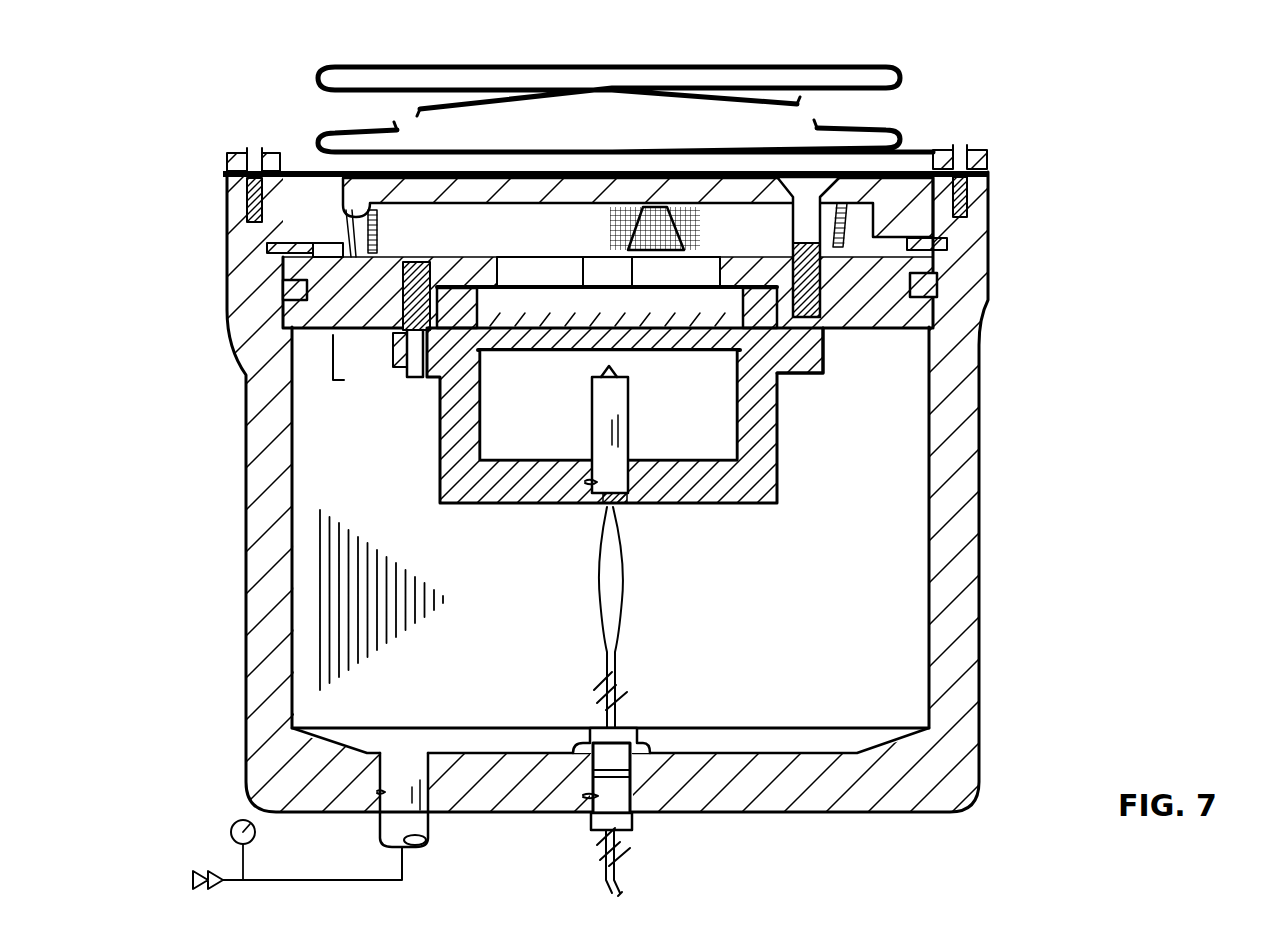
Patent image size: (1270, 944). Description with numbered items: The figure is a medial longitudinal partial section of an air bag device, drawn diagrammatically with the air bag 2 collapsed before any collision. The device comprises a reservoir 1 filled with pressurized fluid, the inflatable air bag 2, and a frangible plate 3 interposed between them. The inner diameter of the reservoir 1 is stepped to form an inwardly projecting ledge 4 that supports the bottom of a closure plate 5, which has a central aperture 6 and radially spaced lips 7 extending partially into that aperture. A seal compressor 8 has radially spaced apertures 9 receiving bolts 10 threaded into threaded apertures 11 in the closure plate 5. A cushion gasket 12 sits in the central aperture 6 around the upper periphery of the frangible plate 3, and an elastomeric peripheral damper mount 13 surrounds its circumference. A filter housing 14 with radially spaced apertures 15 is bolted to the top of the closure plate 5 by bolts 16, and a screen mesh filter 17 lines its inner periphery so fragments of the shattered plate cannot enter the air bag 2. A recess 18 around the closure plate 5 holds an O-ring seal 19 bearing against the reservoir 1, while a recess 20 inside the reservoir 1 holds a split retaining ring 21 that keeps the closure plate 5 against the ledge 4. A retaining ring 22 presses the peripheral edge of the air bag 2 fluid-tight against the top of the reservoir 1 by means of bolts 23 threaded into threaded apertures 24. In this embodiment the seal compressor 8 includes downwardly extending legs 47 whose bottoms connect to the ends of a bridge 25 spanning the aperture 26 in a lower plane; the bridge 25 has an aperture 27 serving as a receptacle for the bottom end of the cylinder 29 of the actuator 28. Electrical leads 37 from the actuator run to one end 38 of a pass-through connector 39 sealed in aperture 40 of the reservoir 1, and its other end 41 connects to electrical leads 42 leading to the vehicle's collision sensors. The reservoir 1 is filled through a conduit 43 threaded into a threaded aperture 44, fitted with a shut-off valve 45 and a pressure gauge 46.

The reservoir 1 is at (977, 477).
The air bag 2 is at (750, 67).
The frangible plate 3 is at (522, 350).
The ledge 4 is at (292, 338).
The closure plate 5 is at (345, 367).
The central aperture 6 is at (676, 272).
The lips 7 is at (500, 279).
The seal compressor 8 is at (812, 373).
The apertures 9 is at (403, 383).
The bolts 10 is at (412, 403).
The threaded apertures 11 is at (403, 279).
The cushion gasket 12 is at (541, 279).
The peripheral damper mount 13 is at (740, 302).
The filter housing 14 is at (873, 203).
The apertures 15 is at (352, 240).
The bolts 16 is at (808, 290).
The filter 17 is at (380, 242).
The recess 18 is at (288, 298).
The O-ring seal 19 is at (283, 279).
The recess 20 is at (281, 257).
The split retaining ring 21 is at (267, 241).
The retaining ring 22 is at (223, 172).
The bolts 23 is at (242, 150).
The threaded apertures 24 is at (247, 201).
The bridge 25 is at (702, 505).
The aperture 26 is at (663, 390).
The aperture 27 is at (585, 481).
The actuator 28 is at (639, 433).
The cylinder 29 is at (592, 407).
The electrical leads 37 is at (620, 597).
The end 38 is at (640, 727).
The pass-through connector 39 is at (632, 763).
The aperture 40 is at (583, 795).
The end 41 is at (630, 827).
The electrical leads 42 is at (620, 892).
The conduit 43 is at (428, 830).
The threaded aperture 44 is at (377, 793).
The shut-off valve 45 is at (203, 893).
The pressure gauge 46 is at (257, 843).
The legs 47 is at (482, 412).